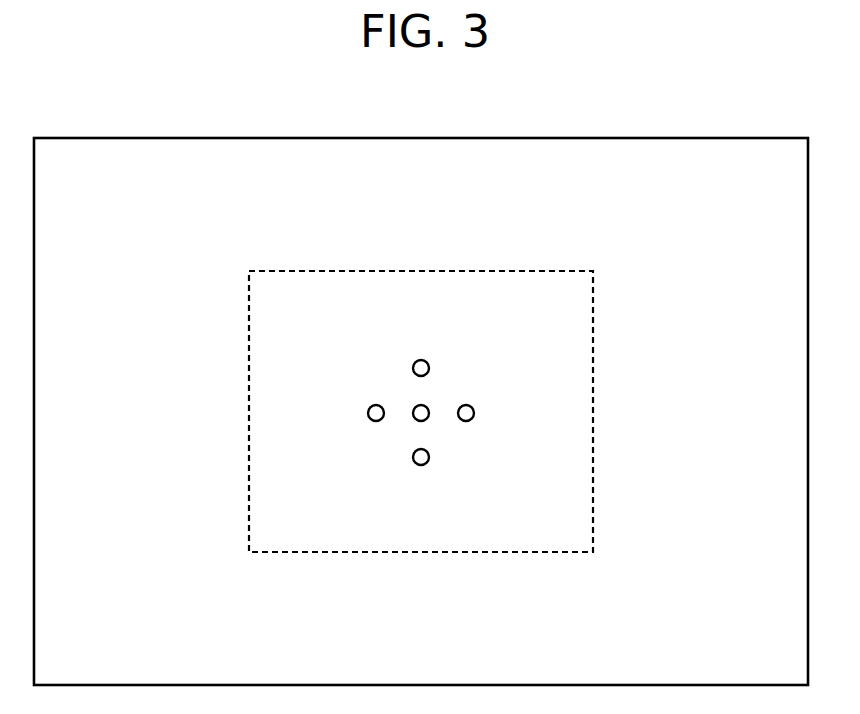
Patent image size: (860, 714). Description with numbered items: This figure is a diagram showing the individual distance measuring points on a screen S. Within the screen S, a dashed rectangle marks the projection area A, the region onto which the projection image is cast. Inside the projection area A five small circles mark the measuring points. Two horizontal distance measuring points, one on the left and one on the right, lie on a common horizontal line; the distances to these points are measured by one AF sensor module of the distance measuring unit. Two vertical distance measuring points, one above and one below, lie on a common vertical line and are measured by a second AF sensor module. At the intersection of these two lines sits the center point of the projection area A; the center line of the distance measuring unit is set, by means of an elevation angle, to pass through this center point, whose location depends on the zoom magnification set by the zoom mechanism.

The screen S is at (743, 138).
The projection area A is at (521, 271).